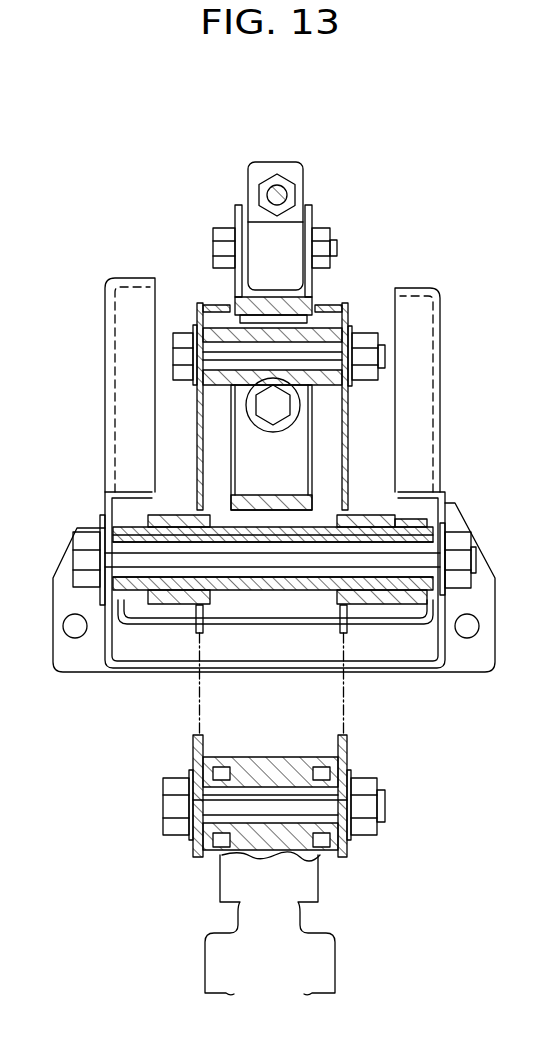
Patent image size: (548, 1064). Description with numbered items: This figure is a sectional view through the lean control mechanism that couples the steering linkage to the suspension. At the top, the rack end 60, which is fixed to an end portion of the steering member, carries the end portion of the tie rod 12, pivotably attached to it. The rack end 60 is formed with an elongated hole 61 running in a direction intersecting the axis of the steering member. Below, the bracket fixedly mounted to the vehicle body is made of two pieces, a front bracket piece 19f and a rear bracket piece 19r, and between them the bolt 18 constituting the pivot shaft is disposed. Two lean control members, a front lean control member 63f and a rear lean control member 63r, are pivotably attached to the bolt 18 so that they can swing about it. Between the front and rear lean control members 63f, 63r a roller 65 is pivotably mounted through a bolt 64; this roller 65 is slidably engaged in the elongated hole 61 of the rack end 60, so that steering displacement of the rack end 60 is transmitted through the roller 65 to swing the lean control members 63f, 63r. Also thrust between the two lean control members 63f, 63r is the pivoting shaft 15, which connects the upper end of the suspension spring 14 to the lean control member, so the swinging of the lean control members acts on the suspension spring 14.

The tie rod 12 is at (288, 193).
The rack end 60 is at (332, 350).
The bolt 64 is at (302, 307).
The roller 65 is at (228, 332).
The front lean control member 63f is at (197, 317).
The rear lean control member 63r is at (350, 320).
The elongated hole 61 is at (305, 448).
The front bracket piece 19f is at (105, 377).
The rear bracket piece 19r is at (443, 380).
The bolt constituting the pivot shaft 18 is at (108, 535).
The pivoting shaft 15 is at (355, 842).
The suspension spring 14 is at (330, 957).